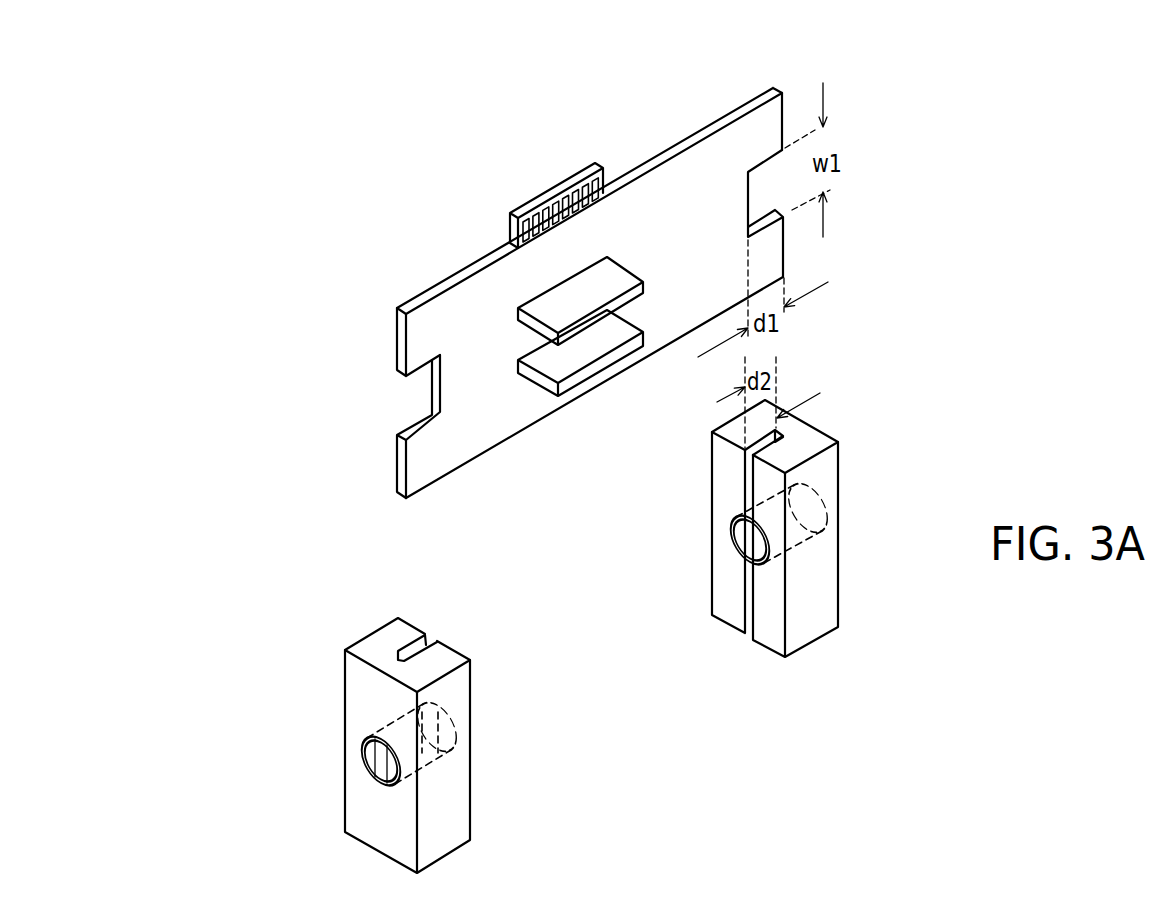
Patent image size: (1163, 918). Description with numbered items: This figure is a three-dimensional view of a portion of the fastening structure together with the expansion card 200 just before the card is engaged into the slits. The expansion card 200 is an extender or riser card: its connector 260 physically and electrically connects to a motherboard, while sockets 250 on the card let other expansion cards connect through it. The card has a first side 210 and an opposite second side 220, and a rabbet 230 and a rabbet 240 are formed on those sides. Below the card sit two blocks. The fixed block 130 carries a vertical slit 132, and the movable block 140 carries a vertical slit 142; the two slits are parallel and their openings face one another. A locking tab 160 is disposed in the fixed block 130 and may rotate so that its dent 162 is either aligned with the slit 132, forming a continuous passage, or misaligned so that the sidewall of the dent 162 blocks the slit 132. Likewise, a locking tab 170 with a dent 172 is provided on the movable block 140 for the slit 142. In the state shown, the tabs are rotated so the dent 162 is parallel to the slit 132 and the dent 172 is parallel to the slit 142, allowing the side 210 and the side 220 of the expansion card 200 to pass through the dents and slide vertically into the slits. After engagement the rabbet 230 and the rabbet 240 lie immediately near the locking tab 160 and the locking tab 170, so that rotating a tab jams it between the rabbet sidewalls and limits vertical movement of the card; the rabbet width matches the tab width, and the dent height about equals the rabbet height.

The expansion card 200 is at (682, 173).
The first side 210 is at (771, 108).
The second side 220 is at (417, 323).
The rabbet 230 is at (768, 188).
The rabbet 240 is at (412, 395).
The sockets 250 is at (598, 325).
The connector 260 is at (562, 202).
The fixed block 130 is at (833, 487).
The slit 132 is at (752, 455).
The locking tab 160 is at (738, 538).
The dent 162 is at (750, 548).
The movable block 140 is at (355, 688).
The slit 142 is at (427, 640).
The locking tab 170 is at (370, 752).
The dent 172 is at (420, 712).